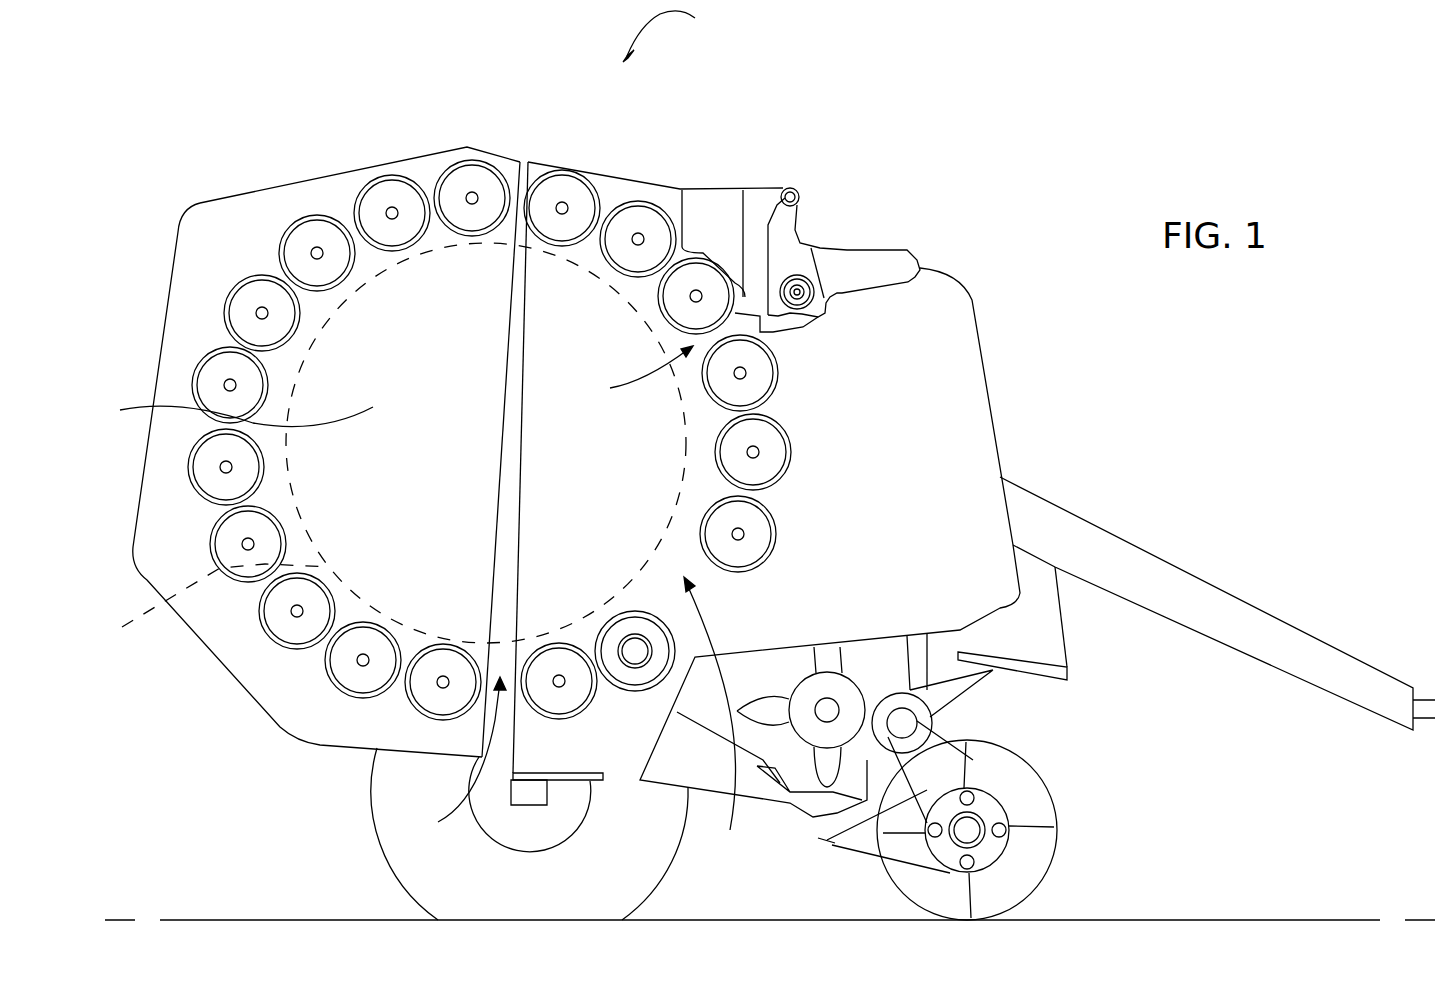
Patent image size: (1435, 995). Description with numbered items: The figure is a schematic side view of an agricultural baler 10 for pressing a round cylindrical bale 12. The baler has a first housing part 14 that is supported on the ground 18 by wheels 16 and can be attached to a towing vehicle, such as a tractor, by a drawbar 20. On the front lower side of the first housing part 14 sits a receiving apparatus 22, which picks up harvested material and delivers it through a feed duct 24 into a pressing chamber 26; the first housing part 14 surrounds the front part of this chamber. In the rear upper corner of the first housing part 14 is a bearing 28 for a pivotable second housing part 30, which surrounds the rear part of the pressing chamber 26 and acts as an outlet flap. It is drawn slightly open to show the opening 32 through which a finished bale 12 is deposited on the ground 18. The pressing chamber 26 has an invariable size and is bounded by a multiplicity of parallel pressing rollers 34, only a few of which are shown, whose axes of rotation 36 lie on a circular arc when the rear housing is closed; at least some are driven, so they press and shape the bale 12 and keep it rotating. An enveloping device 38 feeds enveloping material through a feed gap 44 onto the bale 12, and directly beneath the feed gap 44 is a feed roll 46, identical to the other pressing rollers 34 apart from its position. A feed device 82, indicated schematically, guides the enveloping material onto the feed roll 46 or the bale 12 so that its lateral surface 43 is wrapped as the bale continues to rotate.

The baler 10 is at (679, 33).
The bale 12 is at (448, 500).
The first housing part 14 is at (947, 350).
The wheels 16 is at (455, 878).
The ground 18 is at (1190, 918).
The drawbar 20 is at (1203, 610).
The receiving apparatus 22 is at (821, 852).
The feed duct 24 is at (715, 723).
The pressing chamber 26 is at (226, 422).
The bearing 28 is at (507, 163).
The second housing part 30 is at (230, 218).
The opening 32 is at (457, 761).
The pressing rollers 34 is at (390, 180).
The axes of rotation 36 is at (390, 213).
The enveloping device 38 is at (832, 219).
The lateral surface 43 is at (211, 610).
The feed gap 44 is at (633, 377).
The feed roll 46 is at (720, 397).
The feed device 82 is at (770, 337).